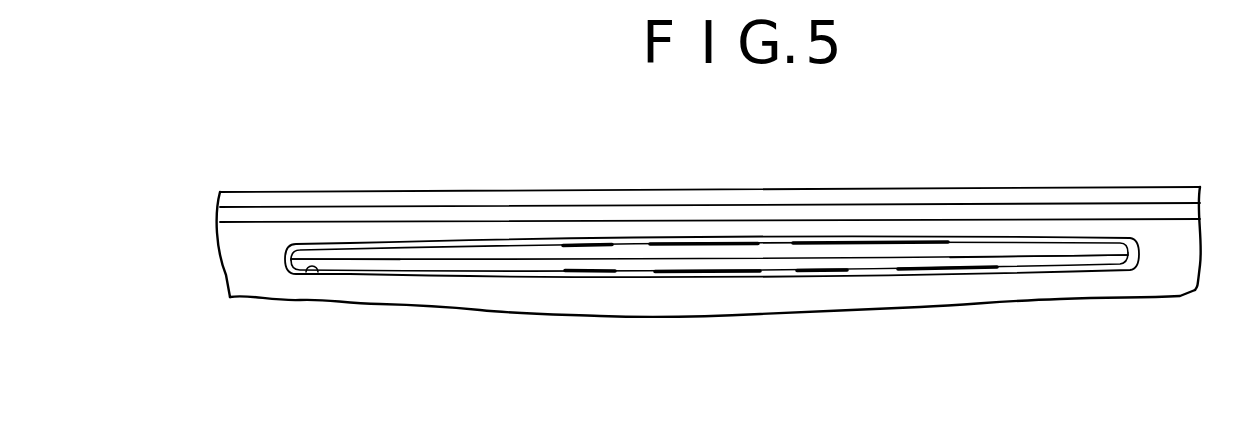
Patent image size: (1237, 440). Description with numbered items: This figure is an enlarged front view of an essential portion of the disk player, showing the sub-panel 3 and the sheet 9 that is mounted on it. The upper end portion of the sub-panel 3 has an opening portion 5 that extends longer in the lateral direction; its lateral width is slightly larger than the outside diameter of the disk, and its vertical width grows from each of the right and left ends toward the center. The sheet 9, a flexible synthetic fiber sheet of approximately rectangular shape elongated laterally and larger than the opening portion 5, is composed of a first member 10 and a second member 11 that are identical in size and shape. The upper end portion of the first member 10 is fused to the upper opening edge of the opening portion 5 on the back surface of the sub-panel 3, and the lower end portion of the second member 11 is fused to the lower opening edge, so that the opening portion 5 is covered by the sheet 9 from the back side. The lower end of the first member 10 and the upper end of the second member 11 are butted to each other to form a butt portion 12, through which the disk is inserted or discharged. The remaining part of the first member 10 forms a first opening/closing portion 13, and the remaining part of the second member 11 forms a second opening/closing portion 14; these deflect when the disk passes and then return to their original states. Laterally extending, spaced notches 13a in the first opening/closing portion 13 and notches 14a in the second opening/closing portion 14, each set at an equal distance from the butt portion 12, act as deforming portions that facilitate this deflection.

The sub-panel 3 is at (760, 198).
The opening portion 5 is at (318, 272).
The sheet 9 is at (1002, 258).
The first member 10 is at (633, 250).
The second member 11 is at (646, 259).
The butt portion 12 is at (383, 260).
The first opening/closing portion 13 is at (534, 252).
The notches 13a is at (482, 250).
The second opening/closing portion 14 is at (548, 262).
The notches 14a is at (513, 272).